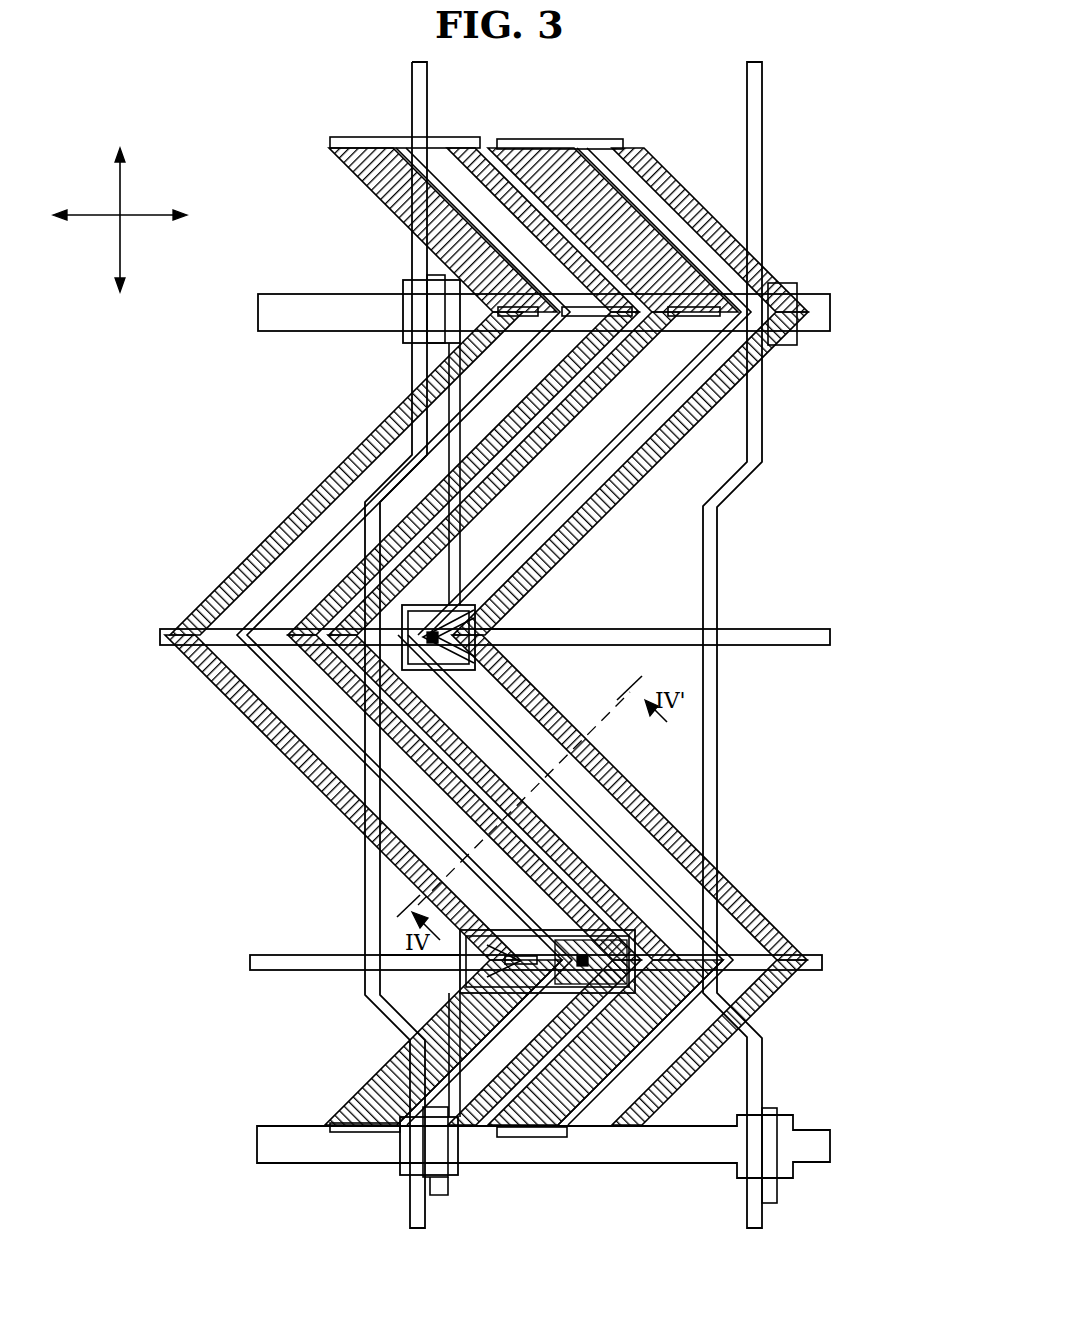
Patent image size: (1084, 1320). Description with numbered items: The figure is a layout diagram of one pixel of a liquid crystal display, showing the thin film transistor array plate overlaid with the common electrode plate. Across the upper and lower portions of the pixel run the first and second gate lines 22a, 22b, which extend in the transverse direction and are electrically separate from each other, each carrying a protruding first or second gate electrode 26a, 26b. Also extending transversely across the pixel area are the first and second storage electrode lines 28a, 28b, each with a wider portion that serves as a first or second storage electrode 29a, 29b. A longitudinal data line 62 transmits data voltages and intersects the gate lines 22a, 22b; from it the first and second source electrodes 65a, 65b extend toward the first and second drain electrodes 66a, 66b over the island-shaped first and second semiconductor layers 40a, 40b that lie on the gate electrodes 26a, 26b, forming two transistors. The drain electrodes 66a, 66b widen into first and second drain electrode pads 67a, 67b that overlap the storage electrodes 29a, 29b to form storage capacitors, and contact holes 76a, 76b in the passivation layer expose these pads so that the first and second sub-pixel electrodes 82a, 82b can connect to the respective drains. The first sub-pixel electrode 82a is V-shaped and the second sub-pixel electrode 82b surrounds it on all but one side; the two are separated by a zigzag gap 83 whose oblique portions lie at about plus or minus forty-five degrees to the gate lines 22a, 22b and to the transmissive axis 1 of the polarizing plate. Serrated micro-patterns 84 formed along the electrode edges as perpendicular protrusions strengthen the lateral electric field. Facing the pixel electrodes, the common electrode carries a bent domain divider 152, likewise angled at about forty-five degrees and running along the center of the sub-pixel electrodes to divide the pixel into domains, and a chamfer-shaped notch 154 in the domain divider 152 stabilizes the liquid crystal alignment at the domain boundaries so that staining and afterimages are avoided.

The transmissive axis 1 is at (150, 196).
The first gate line 22a is at (278, 293).
The second gate line 22b is at (278, 1165).
The first gate electrode 26a is at (412, 278).
The second gate electrode 26b is at (440, 1182).
The first storage electrode line 28a is at (803, 628).
The second storage electrode line 28b is at (268, 962).
The first storage electrode 29a is at (538, 602).
The second storage electrode 29b is at (458, 985).
The first semiconductor layer 40a is at (408, 325).
The second semiconductor layer 40b is at (405, 1160).
The data line 62 is at (340, 772).
The first source electrode 65a is at (425, 300).
The second source electrode 65b is at (460, 1168).
The first drain electrode 66a is at (420, 345).
The second drain electrode 66b is at (405, 1066).
The first drain electrode pad 67a is at (548, 588).
The second drain electrode pad 67b is at (528, 1000).
The contact hole 76a is at (477, 648).
The contact hole 76b is at (548, 928).
The first sub-pixel electrode 82a is at (578, 745).
The second sub-pixel electrode 82b is at (903, 1017).
The gap 83 is at (598, 470).
The serrated micro-patterns 84 is at (732, 222).
The domain divider 152 is at (678, 432).
The notch 154 is at (693, 382).